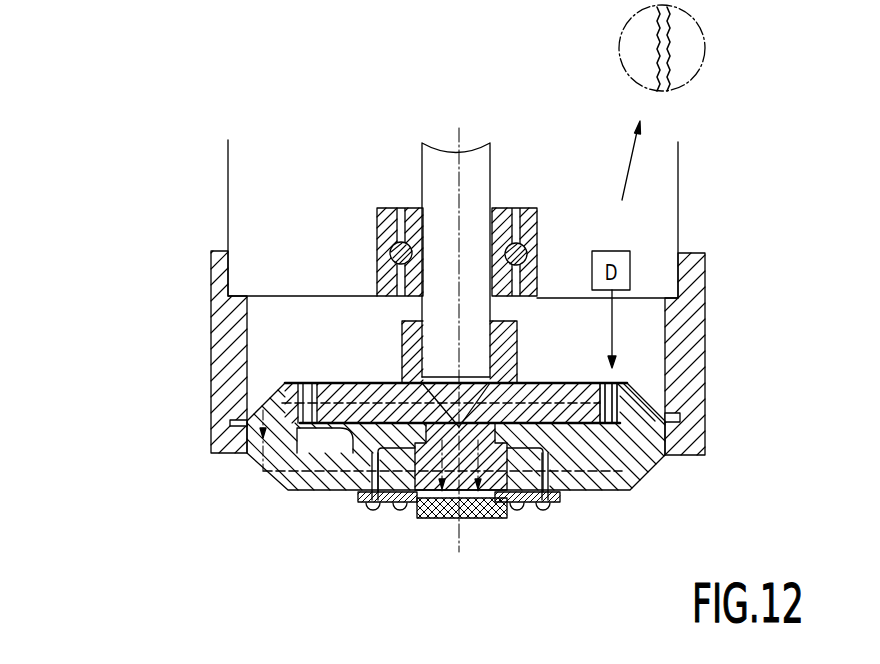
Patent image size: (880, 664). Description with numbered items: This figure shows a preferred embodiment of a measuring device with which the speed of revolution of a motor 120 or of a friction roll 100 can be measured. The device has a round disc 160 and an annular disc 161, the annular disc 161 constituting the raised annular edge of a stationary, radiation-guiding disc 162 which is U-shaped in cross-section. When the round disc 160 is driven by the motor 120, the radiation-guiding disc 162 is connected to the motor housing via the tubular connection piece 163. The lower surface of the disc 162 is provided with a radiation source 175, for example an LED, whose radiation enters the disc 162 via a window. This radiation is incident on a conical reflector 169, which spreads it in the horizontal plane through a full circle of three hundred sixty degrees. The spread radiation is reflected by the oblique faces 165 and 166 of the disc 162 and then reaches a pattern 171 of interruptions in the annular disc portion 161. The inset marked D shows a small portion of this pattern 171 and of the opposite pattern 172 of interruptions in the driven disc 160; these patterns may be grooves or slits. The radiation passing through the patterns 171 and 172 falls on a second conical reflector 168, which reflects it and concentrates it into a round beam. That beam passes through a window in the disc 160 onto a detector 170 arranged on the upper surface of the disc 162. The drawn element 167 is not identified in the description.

The friction roll 100 is at (510, 258).
The motor 120 is at (652, 172).
The round disc 160 is at (342, 382).
The annular disc 161 is at (642, 388).
The radiation-guiding disc 162 is at (603, 480).
The tubular connection piece 163 is at (690, 281).
The oblique face 165 is at (643, 477).
The oblique face 166 is at (644, 404).
The recess 167 is at (348, 436).
The conical reflector 168 is at (285, 384).
The conical reflector 169 is at (453, 518).
The detector 170 is at (388, 508).
The pattern of interruptions 171 is at (680, 40).
The pattern of interruptions 172 is at (655, 38).
The radiation source 175 is at (493, 508).